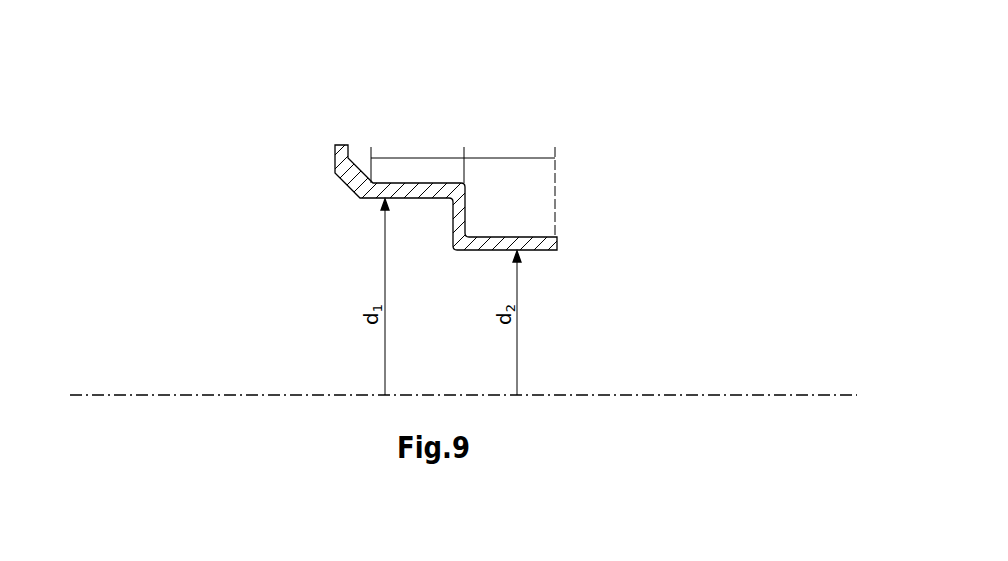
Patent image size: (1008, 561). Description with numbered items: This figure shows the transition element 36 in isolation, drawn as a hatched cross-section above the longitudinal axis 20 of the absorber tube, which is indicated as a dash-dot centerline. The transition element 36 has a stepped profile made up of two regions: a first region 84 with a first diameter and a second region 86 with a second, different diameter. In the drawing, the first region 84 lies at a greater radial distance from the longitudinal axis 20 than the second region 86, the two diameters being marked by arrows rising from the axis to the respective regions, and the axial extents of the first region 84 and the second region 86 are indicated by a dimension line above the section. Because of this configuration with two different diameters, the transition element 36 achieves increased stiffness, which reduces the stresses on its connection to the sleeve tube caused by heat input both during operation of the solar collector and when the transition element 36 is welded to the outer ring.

The longitudinal axis 20 is at (152, 392).
The transition element 36 is at (509, 96).
The first region 84 is at (417, 155).
The second region 86 is at (509, 181).